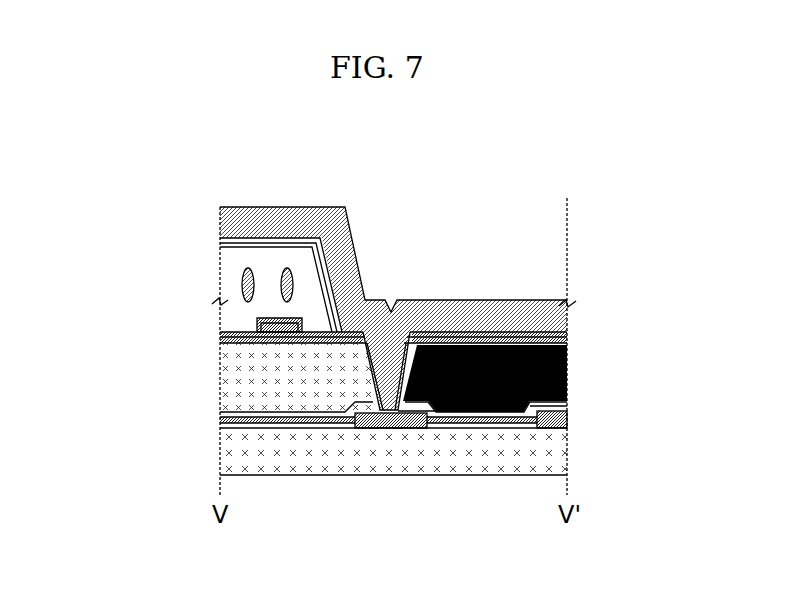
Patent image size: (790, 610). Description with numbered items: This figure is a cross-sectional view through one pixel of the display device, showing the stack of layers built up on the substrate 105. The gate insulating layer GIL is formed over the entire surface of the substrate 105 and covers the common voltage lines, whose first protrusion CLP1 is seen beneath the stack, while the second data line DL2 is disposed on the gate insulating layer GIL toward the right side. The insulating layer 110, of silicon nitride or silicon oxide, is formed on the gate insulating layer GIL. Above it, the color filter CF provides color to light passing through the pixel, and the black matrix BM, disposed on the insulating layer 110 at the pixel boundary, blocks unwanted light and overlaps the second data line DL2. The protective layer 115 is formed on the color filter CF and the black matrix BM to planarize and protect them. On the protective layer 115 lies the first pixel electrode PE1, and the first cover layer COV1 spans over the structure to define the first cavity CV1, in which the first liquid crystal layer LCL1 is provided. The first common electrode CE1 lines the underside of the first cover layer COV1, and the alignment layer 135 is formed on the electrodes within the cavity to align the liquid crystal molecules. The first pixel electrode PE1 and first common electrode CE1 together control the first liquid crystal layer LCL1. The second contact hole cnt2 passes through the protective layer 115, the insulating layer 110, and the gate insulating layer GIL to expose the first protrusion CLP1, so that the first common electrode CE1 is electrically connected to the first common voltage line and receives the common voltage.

The first cover layer COV1 is at (289, 222).
The first common electrode CE1 is at (222, 238).
The alignment layer 135 is at (222, 243).
The first cavity CV1 is at (232, 268).
The first liquid crystal layer LCL1 is at (222, 316).
The first pixel electrode PE1 is at (280, 336).
The protective layer 115 is at (222, 345).
The second contact hole cnt2 is at (390, 366).
The color filter CF is at (331, 375).
The black matrix BM is at (569, 372).
The insulating layer 110 is at (222, 412).
The first protrusion of the first common voltage line CLP1 is at (396, 413).
The second data line DL2 is at (549, 426).
The gate insulating layer GIL is at (222, 422).
The substrate 105 is at (222, 450).